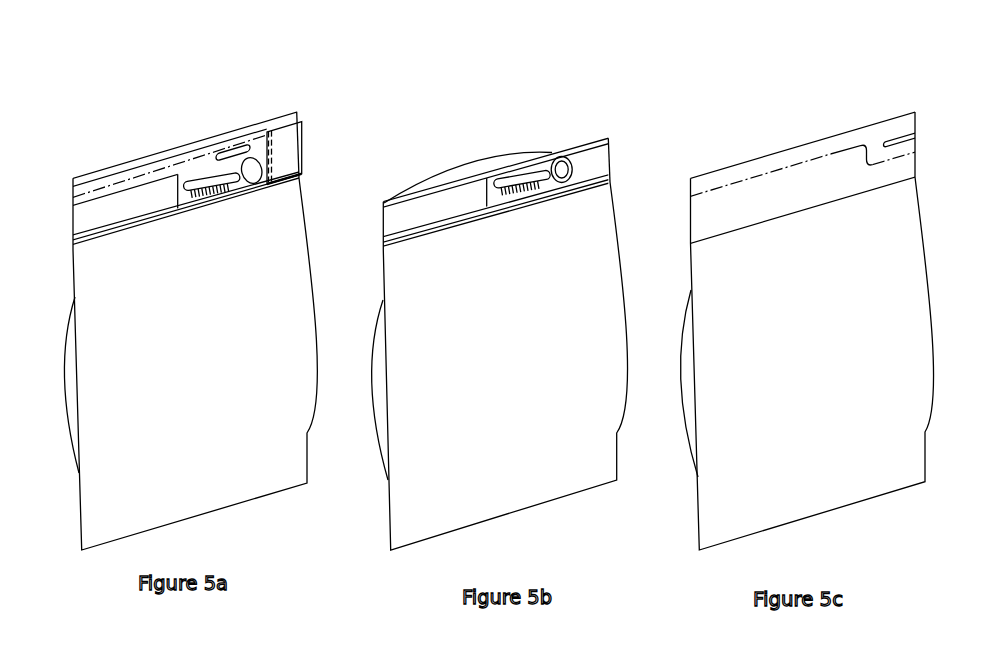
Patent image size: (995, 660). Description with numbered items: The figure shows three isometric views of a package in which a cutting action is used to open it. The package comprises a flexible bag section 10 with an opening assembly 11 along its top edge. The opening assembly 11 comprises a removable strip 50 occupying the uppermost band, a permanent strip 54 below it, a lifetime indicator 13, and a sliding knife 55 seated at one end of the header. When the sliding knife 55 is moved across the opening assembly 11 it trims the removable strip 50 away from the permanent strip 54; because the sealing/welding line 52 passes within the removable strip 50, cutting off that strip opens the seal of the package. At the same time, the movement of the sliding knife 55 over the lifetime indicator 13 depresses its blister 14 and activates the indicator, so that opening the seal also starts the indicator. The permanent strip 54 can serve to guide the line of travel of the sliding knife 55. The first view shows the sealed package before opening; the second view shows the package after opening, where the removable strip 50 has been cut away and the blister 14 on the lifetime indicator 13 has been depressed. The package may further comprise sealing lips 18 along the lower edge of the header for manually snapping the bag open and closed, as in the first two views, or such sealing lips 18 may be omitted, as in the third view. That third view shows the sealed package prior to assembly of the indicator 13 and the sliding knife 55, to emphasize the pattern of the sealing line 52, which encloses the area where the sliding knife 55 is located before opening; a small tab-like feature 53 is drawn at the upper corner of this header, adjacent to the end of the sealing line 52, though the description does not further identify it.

In FIG. 5A, the flexible bag section 10 is at (300, 227).
In FIG. 5B, the flexible bag section 10 is at (592, 310).
In FIG. 5C, the flexible bag section 10 is at (723, 293).
In FIG. 5A, the opening assembly 11 is at (135, 168).
In FIG. 5A, the lifetime indicator 13 is at (213, 144).
In FIG. 5B, the lifetime indicator 13 is at (527, 145).
In FIG. 5B, the blister 14 is at (577, 133).
In FIG. 5A, the sealing lips 18 is at (135, 238).
In FIG. 5B, the sealing lips 18 is at (395, 252).
In FIG. 5A, the removable strip 50 is at (81, 156).
In FIG. 5A, the sealing/welding line 52 is at (165, 147).
In FIG. 5C, the sealing/welding line 52 is at (830, 137).
In FIG. 5C, the pull tab 53 is at (902, 119).
In FIG. 5A, the permanent strip 54 is at (118, 208).
In FIG. 5B, the permanent strip 54 is at (445, 207).
In FIG. 5A, the sliding knife 55 is at (287, 147).